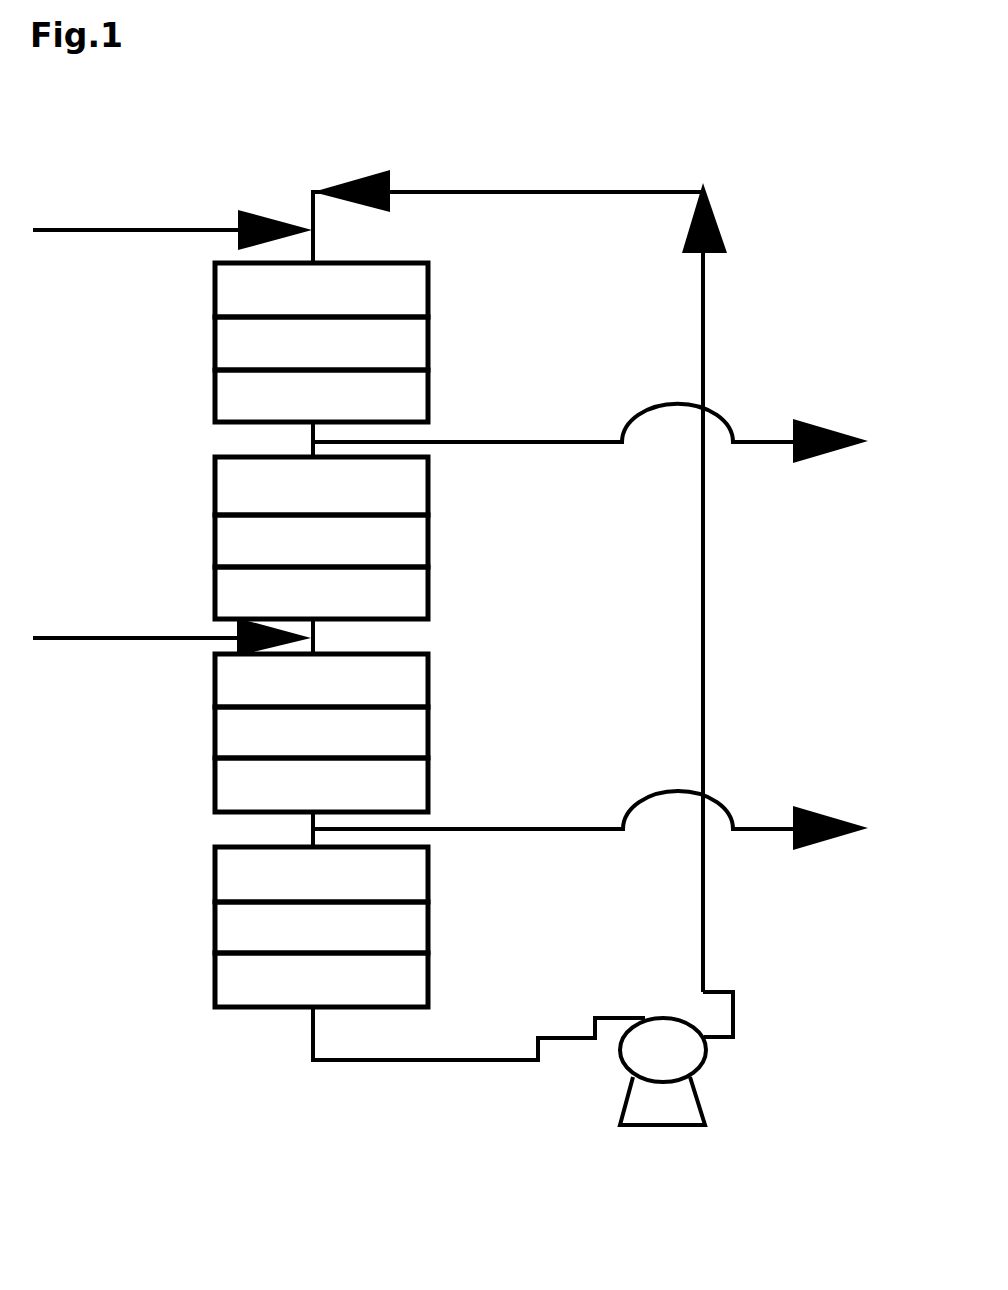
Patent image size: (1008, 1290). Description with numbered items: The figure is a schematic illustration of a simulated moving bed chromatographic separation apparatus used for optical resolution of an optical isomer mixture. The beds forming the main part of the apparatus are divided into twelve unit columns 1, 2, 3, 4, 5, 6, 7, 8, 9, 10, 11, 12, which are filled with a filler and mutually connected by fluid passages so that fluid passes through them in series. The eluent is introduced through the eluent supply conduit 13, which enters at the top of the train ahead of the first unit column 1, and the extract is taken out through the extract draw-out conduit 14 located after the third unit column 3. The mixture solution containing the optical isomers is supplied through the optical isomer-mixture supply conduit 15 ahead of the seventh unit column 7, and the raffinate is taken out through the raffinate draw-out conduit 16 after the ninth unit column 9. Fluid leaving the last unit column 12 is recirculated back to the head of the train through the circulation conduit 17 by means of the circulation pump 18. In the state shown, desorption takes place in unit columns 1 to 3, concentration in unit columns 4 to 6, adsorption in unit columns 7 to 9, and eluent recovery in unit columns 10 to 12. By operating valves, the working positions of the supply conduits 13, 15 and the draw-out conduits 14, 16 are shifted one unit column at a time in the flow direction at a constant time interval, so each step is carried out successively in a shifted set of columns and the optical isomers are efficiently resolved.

The unit column 1 is at (321, 290).
The unit column 2 is at (321, 343).
The unit column 3 is at (321, 395).
The unit column 4 is at (321, 486).
The unit column 5 is at (321, 541).
The unit column 6 is at (321, 593).
The unit column 7 is at (321, 680).
The unit column 8 is at (321, 732).
The unit column 9 is at (321, 785).
The unit column 10 is at (321, 874).
The unit column 11 is at (321, 927).
The unit column 12 is at (321, 980).
The eluent supply conduit 13 is at (172, 218).
The extract draw-out conduit 14 is at (590, 431).
The optical isomer-mixture supply conduit 15 is at (172, 626).
The raffinate draw-out conduit 16 is at (590, 818).
The circulation conduit 17 is at (536, 581).
The circulation pump 18 is at (523, 1058).